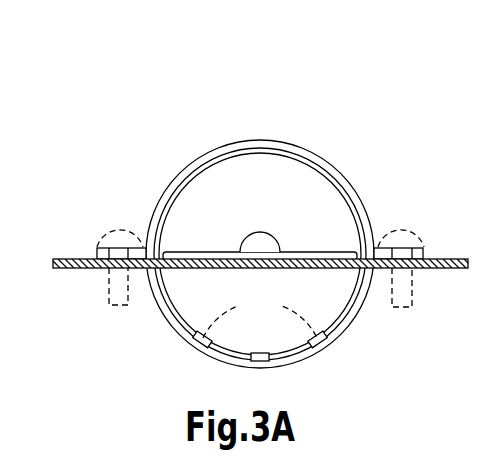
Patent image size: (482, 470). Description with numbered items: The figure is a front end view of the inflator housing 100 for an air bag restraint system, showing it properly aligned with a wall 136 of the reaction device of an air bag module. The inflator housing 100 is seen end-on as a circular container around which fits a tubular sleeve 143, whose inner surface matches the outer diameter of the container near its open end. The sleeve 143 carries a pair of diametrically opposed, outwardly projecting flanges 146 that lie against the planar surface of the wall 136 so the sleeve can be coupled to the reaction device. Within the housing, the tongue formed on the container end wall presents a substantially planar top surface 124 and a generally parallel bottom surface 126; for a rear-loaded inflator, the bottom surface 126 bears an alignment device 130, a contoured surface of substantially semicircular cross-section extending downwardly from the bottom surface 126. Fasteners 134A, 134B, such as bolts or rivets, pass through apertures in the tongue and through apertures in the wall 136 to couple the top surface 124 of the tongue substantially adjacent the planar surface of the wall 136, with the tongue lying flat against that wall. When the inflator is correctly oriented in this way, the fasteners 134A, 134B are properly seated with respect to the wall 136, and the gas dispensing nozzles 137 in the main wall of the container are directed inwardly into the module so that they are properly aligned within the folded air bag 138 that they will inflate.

The inflator housing 100 is at (225, 152).
The sleeve 143 is at (265, 142).
The folded air bag 138 is at (277, 369).
The gas dispensing nozzles 137 is at (262, 353).
The bottom surface 126 is at (200, 253).
The top surface 124 is at (329, 252).
The alignment device 130 is at (273, 233).
The flanges 146 is at (96, 248).
The wall 136 is at (67, 269).
The fastener 134A is at (123, 300).
The fastener 134B is at (407, 298).